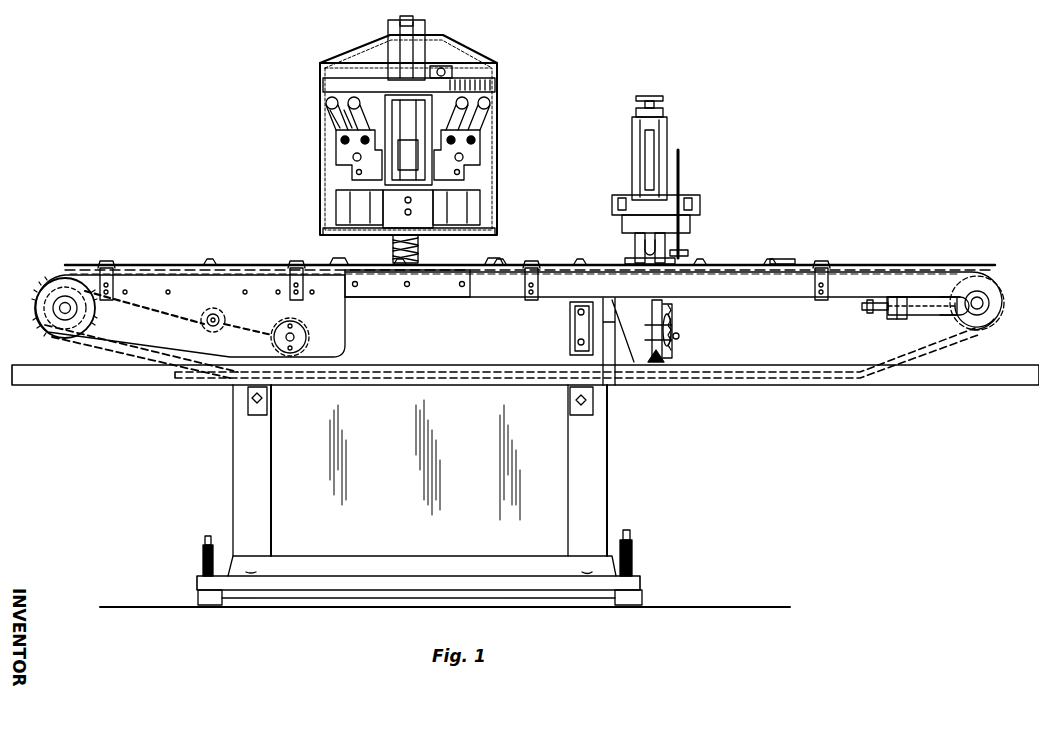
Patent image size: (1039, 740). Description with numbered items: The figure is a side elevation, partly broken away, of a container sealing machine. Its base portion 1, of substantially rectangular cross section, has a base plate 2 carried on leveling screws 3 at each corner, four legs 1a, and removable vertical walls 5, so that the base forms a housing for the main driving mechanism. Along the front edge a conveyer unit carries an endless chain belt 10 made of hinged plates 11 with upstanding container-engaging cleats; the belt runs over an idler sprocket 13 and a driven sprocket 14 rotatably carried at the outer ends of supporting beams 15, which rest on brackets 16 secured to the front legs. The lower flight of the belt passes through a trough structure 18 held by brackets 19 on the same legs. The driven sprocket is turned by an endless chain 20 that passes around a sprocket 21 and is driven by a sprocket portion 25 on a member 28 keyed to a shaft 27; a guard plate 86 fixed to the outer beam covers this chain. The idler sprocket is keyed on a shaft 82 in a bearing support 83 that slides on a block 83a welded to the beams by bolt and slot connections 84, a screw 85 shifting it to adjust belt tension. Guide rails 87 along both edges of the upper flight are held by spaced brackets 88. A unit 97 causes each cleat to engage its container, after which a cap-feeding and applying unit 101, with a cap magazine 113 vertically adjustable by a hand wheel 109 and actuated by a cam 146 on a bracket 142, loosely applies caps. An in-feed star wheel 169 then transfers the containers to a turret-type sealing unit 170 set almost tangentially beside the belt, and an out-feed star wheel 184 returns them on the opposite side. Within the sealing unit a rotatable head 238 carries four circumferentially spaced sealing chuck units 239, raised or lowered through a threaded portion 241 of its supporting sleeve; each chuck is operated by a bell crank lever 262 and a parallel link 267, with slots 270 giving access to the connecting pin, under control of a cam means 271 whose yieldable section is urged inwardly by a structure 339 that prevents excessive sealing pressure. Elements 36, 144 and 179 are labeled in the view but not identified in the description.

The base portion 1 is at (608, 490).
The legs 1a is at (600, 446).
The base plate 2 is at (456, 568).
The leveling screws 3 is at (632, 560).
The vertical walls 5 is at (300, 477).
The endless chain belt 10 is at (250, 270).
The plates 11 is at (44, 291).
The idler sprocket 13 is at (1002, 302).
The driven sprocket 14 is at (40, 308).
The supporting beams 15 is at (740, 297).
The brackets 16 is at (572, 320).
The trough structure 18 is at (172, 385).
The brackets 19 is at (265, 400).
The endless chain 20 is at (153, 308).
The sprocket 21 is at (82, 311).
The sprocket portion 25 is at (270, 337).
The shaft 27 is at (306, 338).
The member 28 is at (282, 323).
The idler gear 36 is at (208, 308).
The shaft 82 is at (986, 312).
The bearing support 83 is at (957, 308).
The block 83a is at (930, 297).
The bolt and slot connections 84 is at (898, 319).
The screw 85 is at (872, 313).
The guard plate 86 is at (332, 320).
The guide rails 87 is at (162, 264).
The brackets 88 is at (824, 261).
The unit 97 is at (783, 259).
The cap-feeding and applying unit 101 is at (673, 122).
The hand wheel 109 is at (636, 100).
The cap magazine 113 is at (622, 218).
The bracket 142 is at (640, 345).
The brace 144 is at (612, 330).
The cam 146 is at (680, 336).
The in-feed star wheel 169 is at (497, 263).
The turret-type sealing unit 170 is at (498, 105).
The mounting plate 179 is at (450, 279).
The out-feed star wheel 184 is at (330, 263).
The head 238 is at (474, 157).
The sealing chuck units 239 is at (486, 203).
The threaded portion 241 is at (393, 243).
The bell crank lever 262 is at (345, 118).
The link 267 is at (330, 104).
The slots 270 is at (362, 157).
The cam means 271 is at (365, 76).
The structure 339 is at (440, 68).